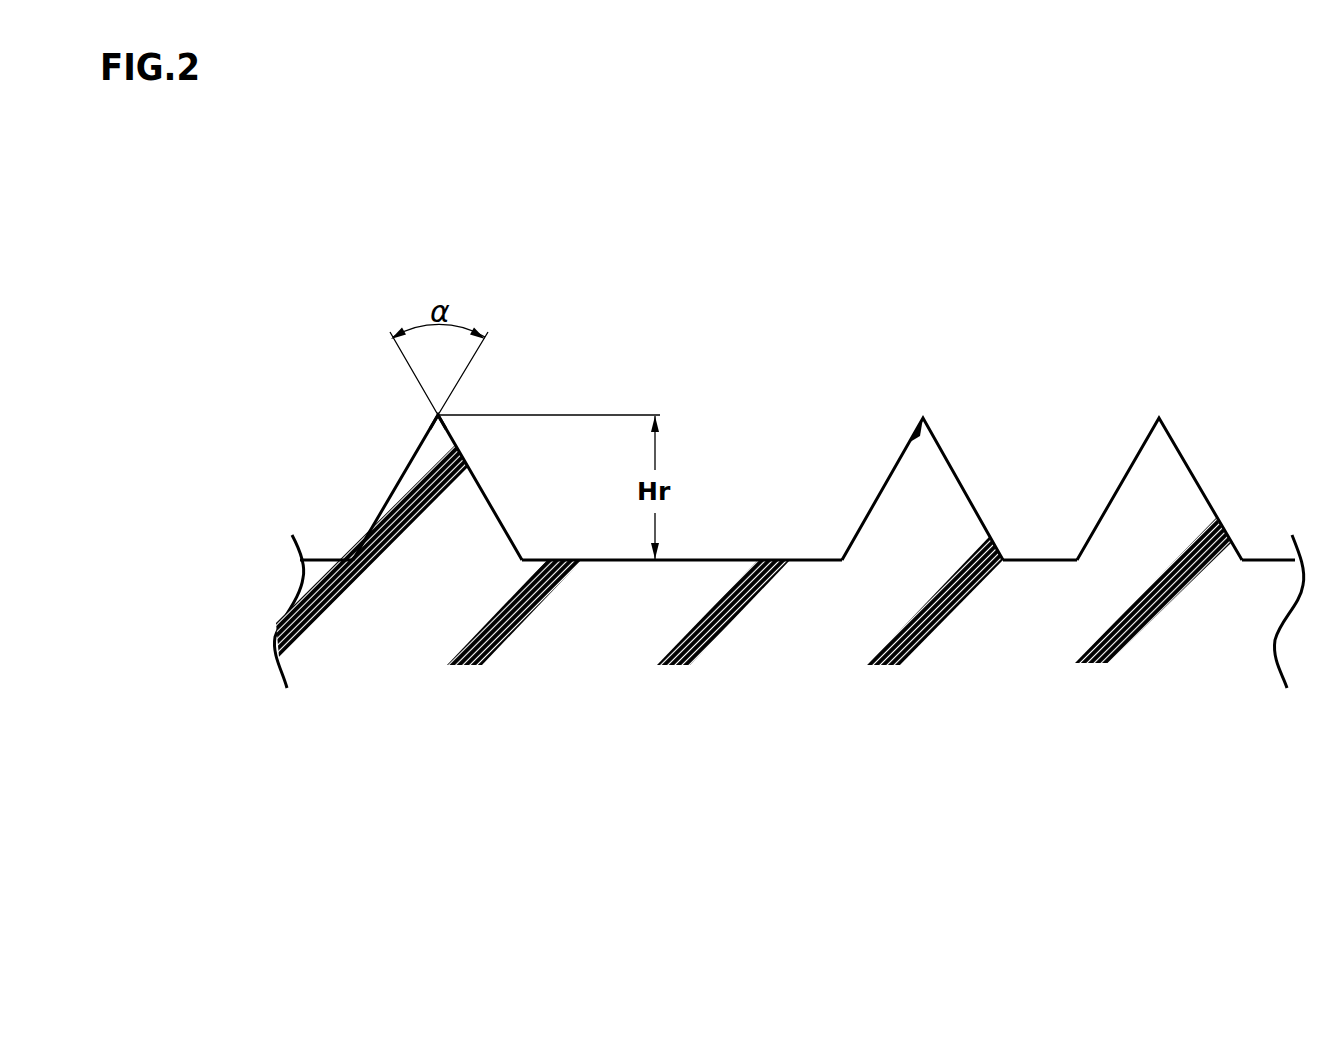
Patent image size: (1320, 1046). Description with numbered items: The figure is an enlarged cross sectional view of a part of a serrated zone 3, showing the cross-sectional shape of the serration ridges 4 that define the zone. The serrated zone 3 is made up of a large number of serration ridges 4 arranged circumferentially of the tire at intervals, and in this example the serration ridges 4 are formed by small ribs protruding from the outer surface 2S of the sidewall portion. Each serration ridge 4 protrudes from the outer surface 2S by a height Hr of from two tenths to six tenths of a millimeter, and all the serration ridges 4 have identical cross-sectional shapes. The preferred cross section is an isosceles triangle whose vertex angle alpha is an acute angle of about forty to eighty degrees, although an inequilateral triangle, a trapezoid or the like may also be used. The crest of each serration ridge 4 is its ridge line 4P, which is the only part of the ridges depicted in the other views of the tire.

The serrated zone 3 is at (788, 516).
The serration ridge 4 is at (397, 488).
The ridge line 4P is at (438, 415).
The outer surface 2S is at (593, 561).